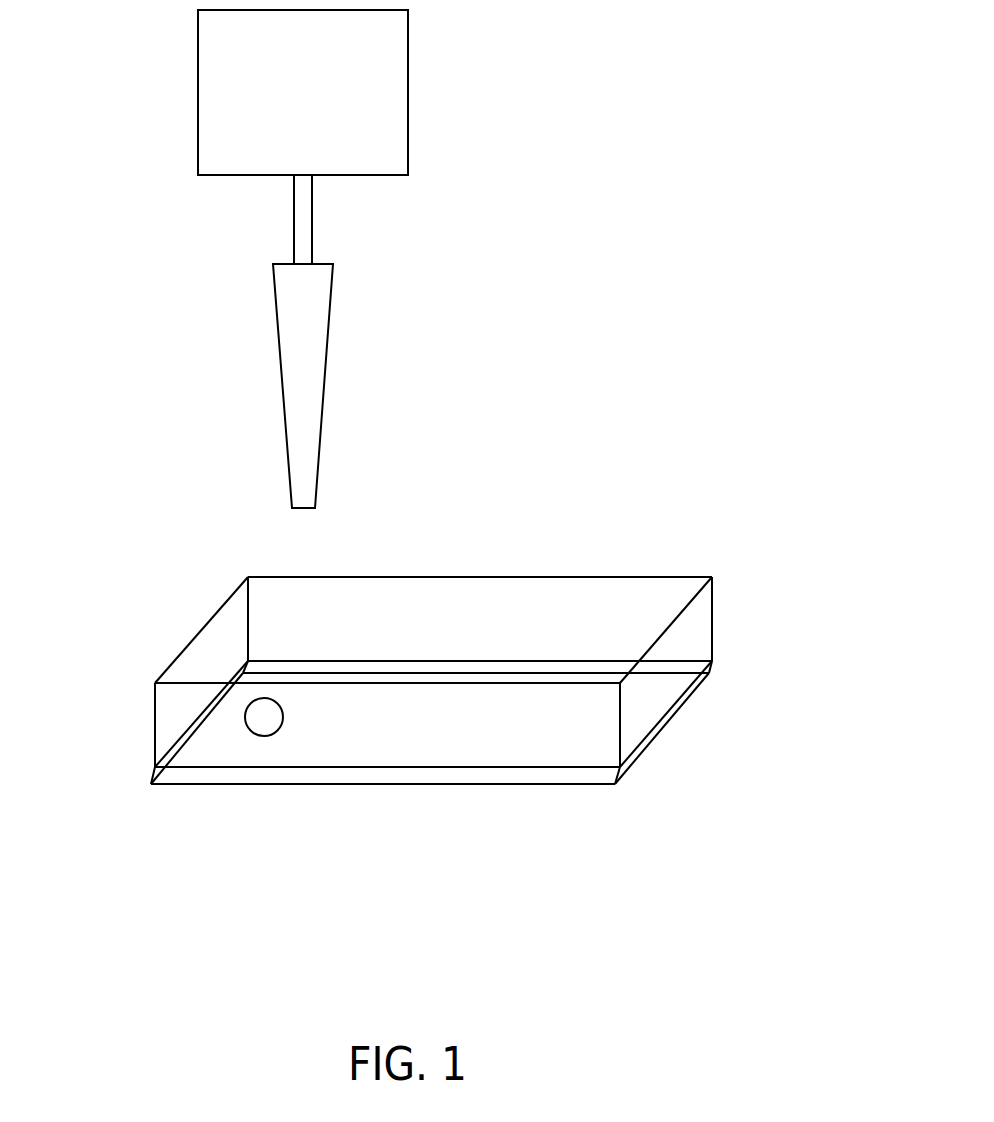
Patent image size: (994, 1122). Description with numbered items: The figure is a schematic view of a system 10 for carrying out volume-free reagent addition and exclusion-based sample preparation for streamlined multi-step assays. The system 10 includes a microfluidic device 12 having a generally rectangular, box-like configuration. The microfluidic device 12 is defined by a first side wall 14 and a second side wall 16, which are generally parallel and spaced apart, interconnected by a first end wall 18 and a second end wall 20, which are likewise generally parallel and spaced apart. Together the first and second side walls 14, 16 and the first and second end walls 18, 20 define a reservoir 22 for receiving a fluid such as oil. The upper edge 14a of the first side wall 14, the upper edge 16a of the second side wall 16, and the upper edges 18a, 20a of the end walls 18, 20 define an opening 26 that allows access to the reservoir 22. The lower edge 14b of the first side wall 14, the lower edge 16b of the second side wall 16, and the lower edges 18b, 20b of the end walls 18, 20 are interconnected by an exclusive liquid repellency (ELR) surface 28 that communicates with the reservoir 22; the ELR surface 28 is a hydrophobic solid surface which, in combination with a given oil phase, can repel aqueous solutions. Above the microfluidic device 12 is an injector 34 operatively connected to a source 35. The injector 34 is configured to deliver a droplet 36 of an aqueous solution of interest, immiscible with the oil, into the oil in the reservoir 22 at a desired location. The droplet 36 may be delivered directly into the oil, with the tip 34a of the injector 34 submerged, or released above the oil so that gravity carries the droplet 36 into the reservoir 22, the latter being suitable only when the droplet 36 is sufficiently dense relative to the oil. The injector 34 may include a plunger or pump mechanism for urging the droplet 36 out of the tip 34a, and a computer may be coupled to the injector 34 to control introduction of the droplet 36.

The system 10 is at (600, 208).
The microfluidic device 12 is at (615, 785).
The first side wall 14 is at (610, 600).
The upper edge of first side wall 14a is at (303, 580).
The lower edge of first side wall 14b is at (327, 660).
The second side wall 16 is at (320, 727).
The upper edge of second side wall 16a is at (468, 785).
The lower edge of second side wall 16b is at (263, 752).
The first end wall 18 is at (235, 628).
The upper edge of first end wall 18a is at (172, 662).
The lower edge of first end wall 18b is at (182, 727).
The second end wall 20 is at (672, 683).
The upper edge of second end wall 20a is at (669, 613).
The lower edge of second end wall 20b is at (645, 748).
The reservoir 22 is at (535, 637).
The opening 26 is at (672, 722).
The exclusive liquid repellency (ELR) surface 28 is at (342, 705).
The injector 34 is at (300, 332).
The tip of injector 34a is at (292, 495).
The source 35 is at (215, 137).
The droplet 36 is at (263, 724).